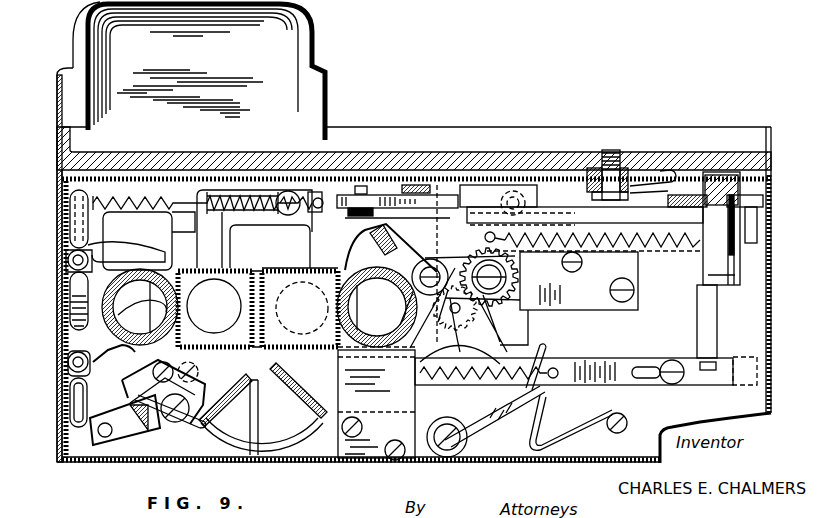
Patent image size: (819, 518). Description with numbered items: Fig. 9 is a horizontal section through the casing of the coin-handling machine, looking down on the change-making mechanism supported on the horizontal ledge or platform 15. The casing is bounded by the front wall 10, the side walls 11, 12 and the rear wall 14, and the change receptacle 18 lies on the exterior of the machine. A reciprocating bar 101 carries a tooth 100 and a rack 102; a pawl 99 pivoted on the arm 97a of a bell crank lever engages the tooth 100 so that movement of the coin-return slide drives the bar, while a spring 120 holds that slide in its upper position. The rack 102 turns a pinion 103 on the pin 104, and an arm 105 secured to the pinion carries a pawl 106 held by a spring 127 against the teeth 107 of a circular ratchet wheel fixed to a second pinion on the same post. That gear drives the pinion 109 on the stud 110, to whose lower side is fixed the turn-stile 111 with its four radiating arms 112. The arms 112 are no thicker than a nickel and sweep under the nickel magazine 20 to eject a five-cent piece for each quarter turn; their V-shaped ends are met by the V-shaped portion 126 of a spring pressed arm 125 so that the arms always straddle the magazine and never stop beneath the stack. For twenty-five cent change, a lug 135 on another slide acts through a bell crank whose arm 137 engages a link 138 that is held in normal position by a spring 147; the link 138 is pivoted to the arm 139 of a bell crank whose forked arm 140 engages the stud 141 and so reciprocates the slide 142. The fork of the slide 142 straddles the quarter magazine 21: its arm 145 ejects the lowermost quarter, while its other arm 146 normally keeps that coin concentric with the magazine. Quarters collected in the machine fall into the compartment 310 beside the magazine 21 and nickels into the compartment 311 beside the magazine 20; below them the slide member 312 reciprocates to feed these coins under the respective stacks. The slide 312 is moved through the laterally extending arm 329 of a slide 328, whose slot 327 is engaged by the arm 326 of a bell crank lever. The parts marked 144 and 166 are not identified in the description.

The change receptacle 18 is at (322, 78).
The side wall 12 is at (57, 348).
The side wall 11 is at (773, 262).
The rear wall 14 is at (298, 466).
The horizontal ledge or platform 15 is at (588, 448).
The slide 142 is at (72, 438).
The lever 144 is at (108, 305).
The arm 146 is at (134, 262).
The coin magazine 21 is at (106, 323).
The arm 145 is at (168, 345).
The compartment or receptacle 310 is at (210, 288).
The laterally extending arm 329 is at (234, 239).
The slide member 312 is at (255, 273).
The coin magazine 20 is at (330, 306).
The compartment or receptacle 311 is at (295, 274).
The stud 110 is at (404, 306).
The radiating arms 112 is at (396, 265).
The arm 105 is at (428, 258).
The spring 127 is at (468, 258).
The pinion 109 is at (446, 321).
The pawl 106 is at (459, 316).
The pin 104 is at (488, 324).
The slot 327 is at (400, 178).
The arm 326 is at (432, 180).
The slide 328 is at (466, 178).
The reciprocating bar 101 is at (575, 212).
The front wall 10 is at (557, 217).
The tooth 100 is at (585, 207).
The laterally projecting lug 135 is at (642, 184).
The arm of bell crank lever 97a is at (690, 200).
The pawl 99 is at (705, 205).
The spring 120 is at (703, 258).
The turn-stile 111 is at (452, 365).
The pinion 103 is at (514, 272).
The teeth of circular ratchet wheel 107 is at (514, 296).
The rack 102 is at (615, 285).
The link 138 is at (633, 384).
The arm 137 is at (712, 333).
The plate 166 is at (418, 374).
The arm 139 is at (165, 392).
The arm 140 is at (152, 430).
The stud 141 is at (101, 440).
The spring 147 is at (487, 390).
The spring pressed arm 125 is at (468, 436).
The V-shaped portion 126 is at (528, 396).